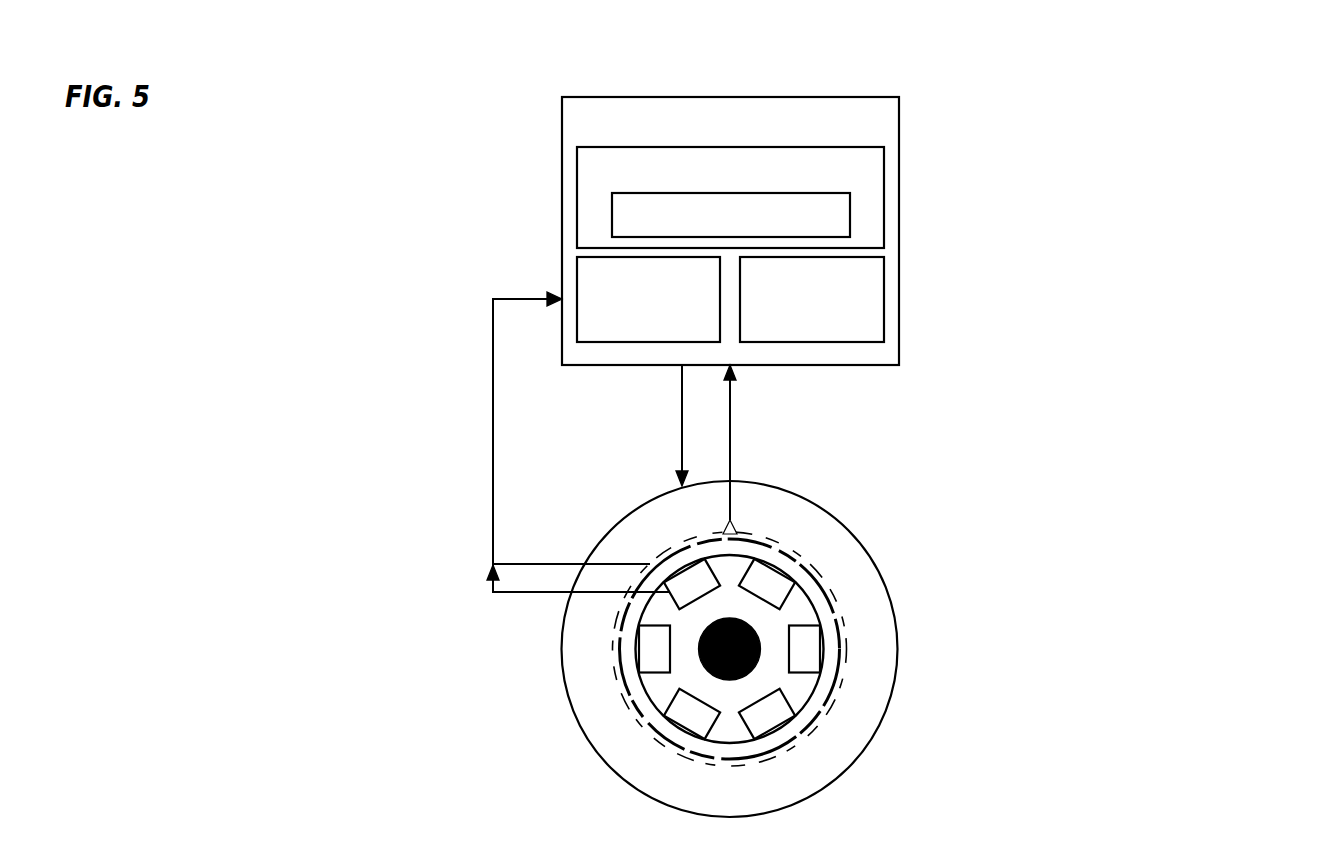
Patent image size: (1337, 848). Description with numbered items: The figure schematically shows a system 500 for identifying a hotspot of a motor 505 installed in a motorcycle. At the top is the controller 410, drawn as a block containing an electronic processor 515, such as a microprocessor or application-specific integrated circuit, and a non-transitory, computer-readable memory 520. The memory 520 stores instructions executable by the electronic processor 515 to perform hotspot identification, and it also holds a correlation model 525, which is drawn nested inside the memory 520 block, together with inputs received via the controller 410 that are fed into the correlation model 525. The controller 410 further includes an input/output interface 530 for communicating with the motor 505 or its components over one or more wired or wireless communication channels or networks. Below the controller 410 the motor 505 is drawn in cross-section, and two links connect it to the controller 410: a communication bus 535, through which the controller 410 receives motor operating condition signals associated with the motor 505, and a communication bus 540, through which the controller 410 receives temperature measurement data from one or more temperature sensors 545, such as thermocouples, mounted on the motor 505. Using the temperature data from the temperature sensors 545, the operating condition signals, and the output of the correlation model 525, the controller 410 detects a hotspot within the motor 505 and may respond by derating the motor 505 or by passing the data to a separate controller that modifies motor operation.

The system 500 is at (1245, 171).
The controller 410 is at (838, 97).
The memory 520 is at (884, 170).
The correlation model 525 is at (850, 214).
The input/output interface 530 is at (577, 297).
The electronic processor 515 is at (884, 297).
The communication bus 535 is at (493, 408).
The communication bus 540 is at (732, 432).
The wheel 505 is at (850, 525).
The temperature sensors 545 is at (732, 520).